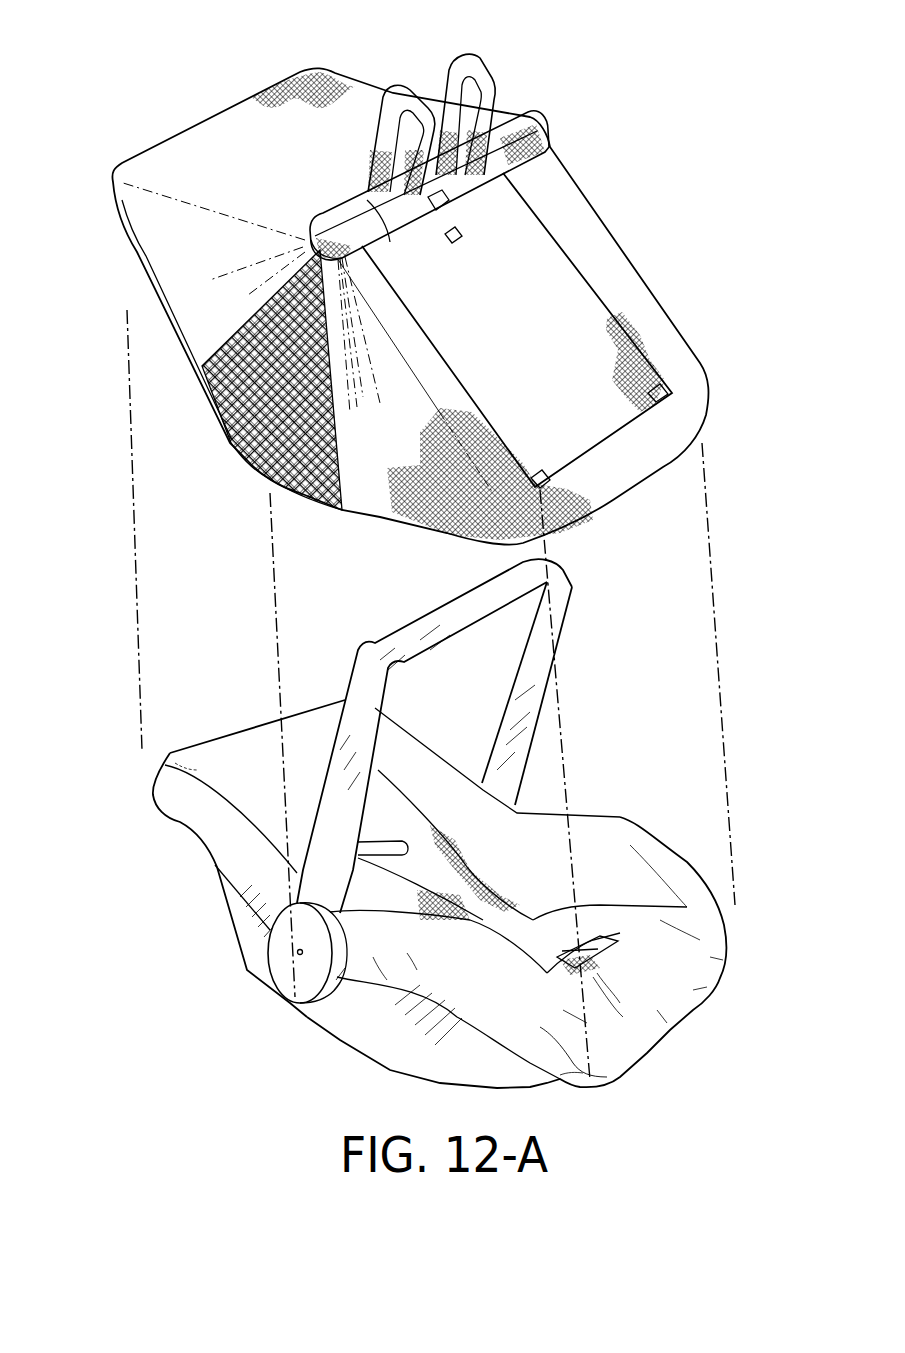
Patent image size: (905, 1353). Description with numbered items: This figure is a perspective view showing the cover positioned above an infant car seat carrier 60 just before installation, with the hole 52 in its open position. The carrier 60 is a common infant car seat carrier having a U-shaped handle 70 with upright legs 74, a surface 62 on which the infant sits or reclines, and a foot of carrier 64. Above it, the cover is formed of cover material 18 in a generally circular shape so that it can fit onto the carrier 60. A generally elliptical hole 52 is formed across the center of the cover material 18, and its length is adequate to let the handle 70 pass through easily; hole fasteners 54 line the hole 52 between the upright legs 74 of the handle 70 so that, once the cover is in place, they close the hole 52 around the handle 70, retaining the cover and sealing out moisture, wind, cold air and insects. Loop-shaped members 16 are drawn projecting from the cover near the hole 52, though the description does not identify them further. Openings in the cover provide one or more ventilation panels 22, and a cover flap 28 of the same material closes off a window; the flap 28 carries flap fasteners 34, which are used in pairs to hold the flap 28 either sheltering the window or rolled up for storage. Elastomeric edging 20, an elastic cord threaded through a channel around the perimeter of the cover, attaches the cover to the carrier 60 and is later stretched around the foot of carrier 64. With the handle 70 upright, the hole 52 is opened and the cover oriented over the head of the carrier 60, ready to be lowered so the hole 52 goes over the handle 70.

The handle 16 is at (460, 62).
The cover material 18 is at (695, 377).
The elastomeric edging 20 is at (155, 294).
The ventilation panel 22 is at (238, 357).
The cover flap 28 is at (627, 337).
The flap fasteners 34 is at (460, 231).
The hole 52 is at (530, 108).
The hole fasteners 54 is at (367, 200).
The infant car seat carrier 60 is at (548, 856).
The surface 62 is at (247, 737).
The foot of carrier 64 is at (677, 1012).
The handle 70 is at (427, 622).
The upright legs 74 is at (507, 732).